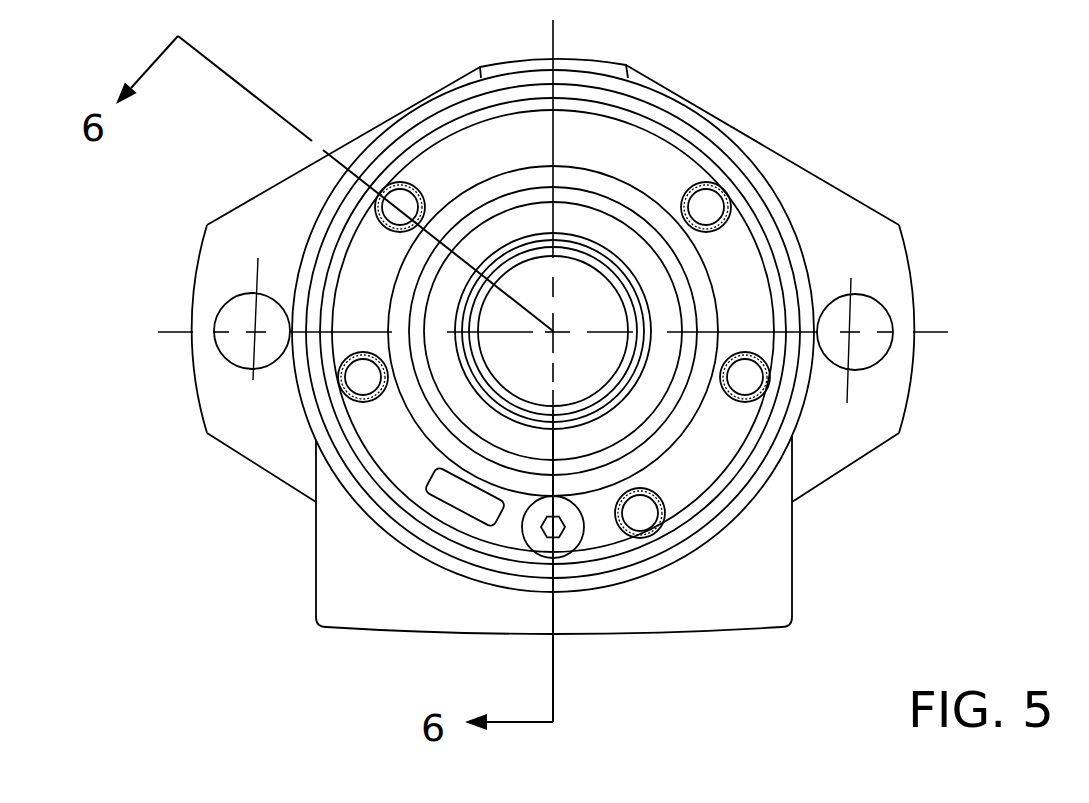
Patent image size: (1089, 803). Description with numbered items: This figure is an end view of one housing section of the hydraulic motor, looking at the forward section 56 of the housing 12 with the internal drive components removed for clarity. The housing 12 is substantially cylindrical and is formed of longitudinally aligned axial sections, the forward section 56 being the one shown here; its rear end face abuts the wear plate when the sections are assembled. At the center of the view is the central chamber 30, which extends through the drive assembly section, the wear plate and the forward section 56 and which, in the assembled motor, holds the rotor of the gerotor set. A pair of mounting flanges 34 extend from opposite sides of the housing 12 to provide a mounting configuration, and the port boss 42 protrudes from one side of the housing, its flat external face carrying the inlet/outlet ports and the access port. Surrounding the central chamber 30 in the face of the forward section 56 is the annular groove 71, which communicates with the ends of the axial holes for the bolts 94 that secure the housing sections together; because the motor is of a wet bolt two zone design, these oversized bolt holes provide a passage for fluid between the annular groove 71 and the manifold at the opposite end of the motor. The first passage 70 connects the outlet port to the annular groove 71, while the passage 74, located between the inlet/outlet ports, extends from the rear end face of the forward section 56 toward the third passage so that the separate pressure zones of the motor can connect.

The housing 12 is at (884, 176).
The central chamber 30 is at (593, 288).
The mounting flanges 34 is at (233, 422).
The port boss 42 is at (353, 603).
The forward section 56 is at (495, 64).
The first passage 70 is at (467, 503).
The annular groove 71 is at (660, 167).
The passage 74 is at (570, 545).
The bolt 94 is at (403, 183).